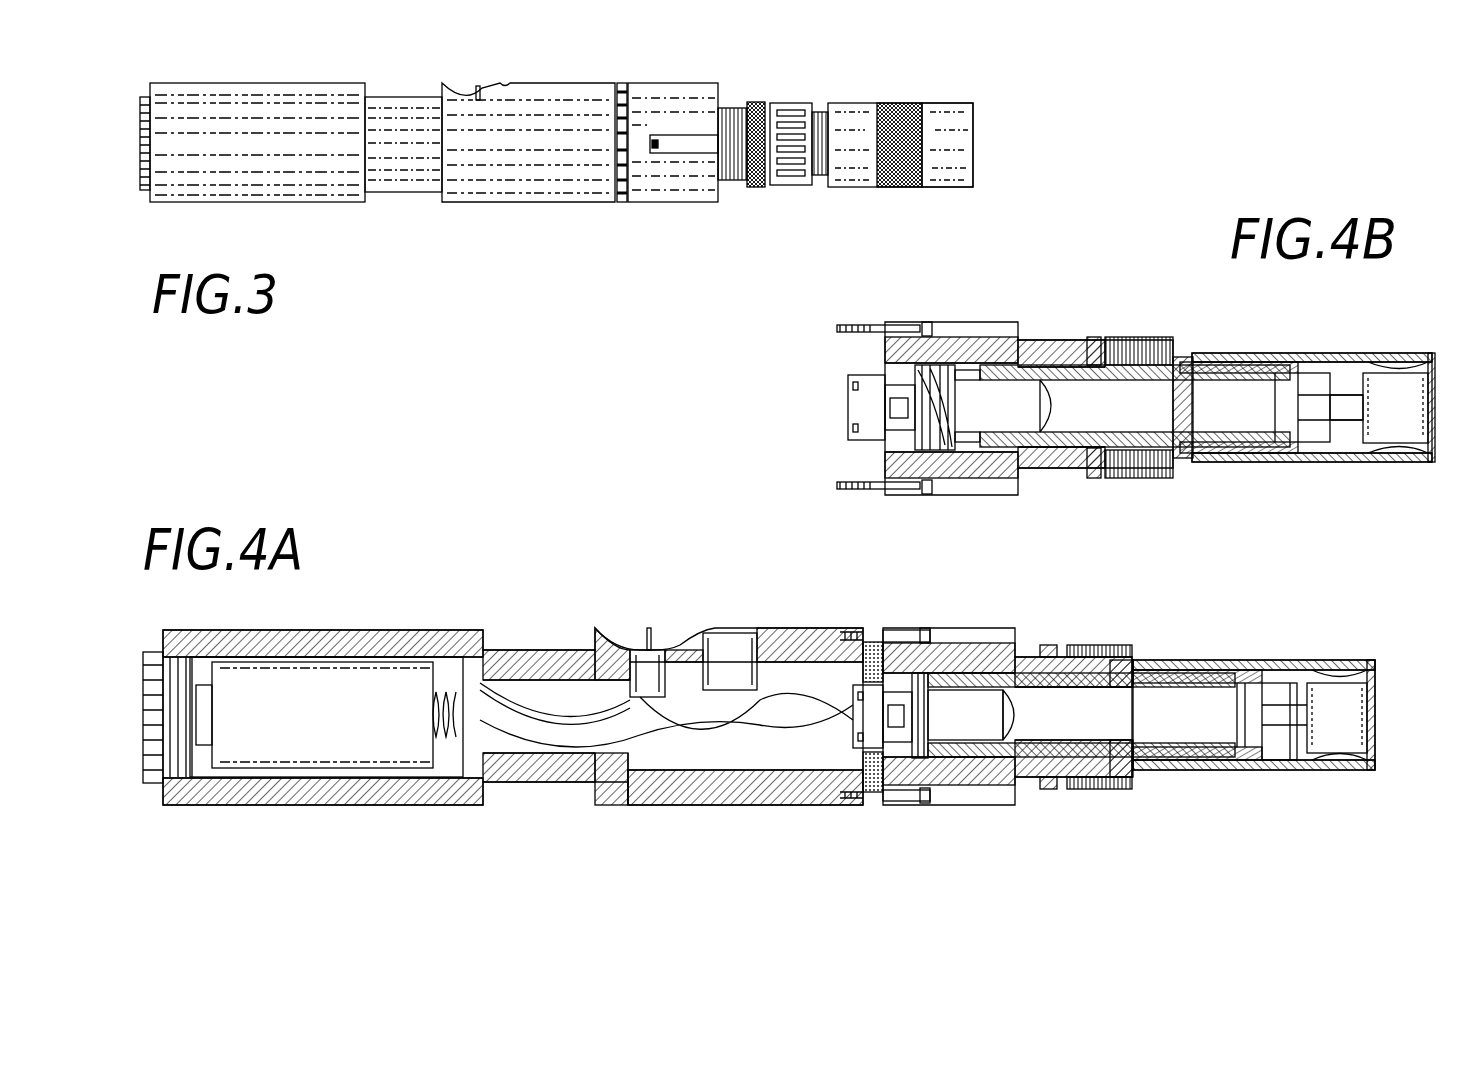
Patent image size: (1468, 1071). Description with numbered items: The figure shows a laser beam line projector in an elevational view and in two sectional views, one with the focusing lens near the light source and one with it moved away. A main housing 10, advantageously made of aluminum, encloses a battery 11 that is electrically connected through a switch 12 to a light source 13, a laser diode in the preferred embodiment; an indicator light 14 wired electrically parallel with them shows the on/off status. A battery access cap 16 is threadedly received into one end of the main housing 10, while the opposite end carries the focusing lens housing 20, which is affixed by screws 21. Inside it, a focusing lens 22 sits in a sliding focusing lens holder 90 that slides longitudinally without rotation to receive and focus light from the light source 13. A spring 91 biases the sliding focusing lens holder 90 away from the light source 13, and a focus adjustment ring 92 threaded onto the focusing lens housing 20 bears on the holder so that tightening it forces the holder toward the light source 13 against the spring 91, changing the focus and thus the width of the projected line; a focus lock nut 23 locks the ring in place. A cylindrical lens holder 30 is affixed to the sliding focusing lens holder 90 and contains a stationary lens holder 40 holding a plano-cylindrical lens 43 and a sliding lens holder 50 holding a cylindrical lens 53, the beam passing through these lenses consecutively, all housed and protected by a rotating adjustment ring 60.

In FIG. 3, the main housing 10 is at (362, 58).
In FIG. 4A, the main housing 10 is at (551, 615).
In FIG. 4A, the battery 11 is at (356, 670).
In FIG. 3, the switch 12 is at (476, 90).
In FIG. 4A, the switch 12 is at (638, 630).
In FIG. 4B, the light source 13 is at (850, 375).
In FIG. 4A, the light source 13 is at (848, 686).
In FIG. 4A, the indicator light 14 is at (726, 630).
In FIG. 3, the battery access cap 16 is at (138, 97).
In FIG. 4A, the battery access cap 16 is at (148, 653).
In FIG. 3, the focusing lens housing 20 is at (638, 58).
In FIG. 4B, the focusing lens housing 20 is at (1033, 300).
In FIG. 4A, the focusing lens housing 20 is at (877, 605).
In FIG. 3, the screws 21 is at (620, 202).
In FIG. 4B, the screws 21 is at (850, 490).
In FIG. 4A, the screws 21 is at (926, 632).
In FIG. 4B, the focusing lens 22 is at (1057, 413).
In FIG. 4A, the focusing lens 22 is at (1019, 708).
In FIG. 3, the focus lock nut 23 is at (753, 187).
In FIG. 4B, the focus lock nut 23 is at (1105, 338).
In FIG. 4A, the focus lock nut 23 is at (1046, 645).
In FIG. 3, the cylindrical lens holder 30 is at (885, 60).
In FIG. 4B, the cylindrical lens holder 30 is at (1338, 330).
In FIG. 4A, the cylindrical lens holder 30 is at (1327, 638).
In FIG. 4B, the stationary lens holder 40 is at (1187, 460).
In FIG. 4A, the stationary lens holder 40 is at (1207, 757).
In FIG. 4B, the plano-cylindrical lens 43 is at (1327, 447).
In FIG. 4A, the plano-cylindrical lens 43 is at (1273, 733).
In FIG. 4B, the sliding lens holder 50 is at (1418, 360).
In FIG. 4A, the sliding lens holder 50 is at (1361, 660).
In FIG. 4B, the cylindrical lens 53 is at (1402, 433).
In FIG. 4A, the cylindrical lens 53 is at (1338, 735).
In FIG. 3, the rotating adjustment ring 60 is at (938, 103).
In FIG. 4B, the rotating adjustment ring 60 is at (1298, 357).
In FIG. 4A, the rotating adjustment ring 60 is at (1260, 660).
In FIG. 3, the sliding focusing lens holder 90 is at (820, 173).
In FIG. 4B, the sliding focusing lens holder 90 is at (1181, 352).
In FIG. 4A, the sliding focusing lens holder 90 is at (1087, 757).
In FIG. 4B, the spring 91 is at (950, 468).
In FIG. 4A, the spring 91 is at (942, 782).
In FIG. 3, the focus adjustment ring 92 is at (791, 103).
In FIG. 4B, the focus adjustment ring 92 is at (1140, 478).